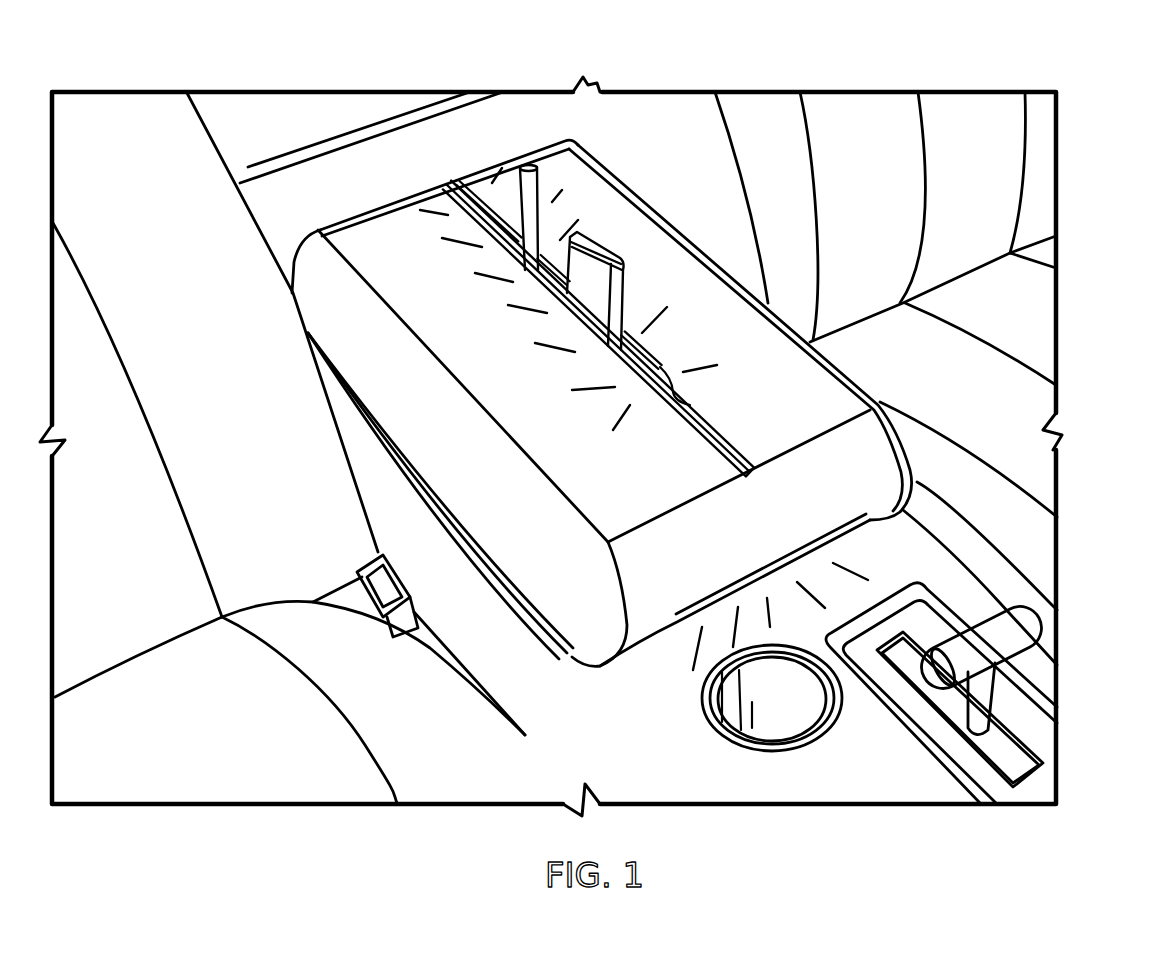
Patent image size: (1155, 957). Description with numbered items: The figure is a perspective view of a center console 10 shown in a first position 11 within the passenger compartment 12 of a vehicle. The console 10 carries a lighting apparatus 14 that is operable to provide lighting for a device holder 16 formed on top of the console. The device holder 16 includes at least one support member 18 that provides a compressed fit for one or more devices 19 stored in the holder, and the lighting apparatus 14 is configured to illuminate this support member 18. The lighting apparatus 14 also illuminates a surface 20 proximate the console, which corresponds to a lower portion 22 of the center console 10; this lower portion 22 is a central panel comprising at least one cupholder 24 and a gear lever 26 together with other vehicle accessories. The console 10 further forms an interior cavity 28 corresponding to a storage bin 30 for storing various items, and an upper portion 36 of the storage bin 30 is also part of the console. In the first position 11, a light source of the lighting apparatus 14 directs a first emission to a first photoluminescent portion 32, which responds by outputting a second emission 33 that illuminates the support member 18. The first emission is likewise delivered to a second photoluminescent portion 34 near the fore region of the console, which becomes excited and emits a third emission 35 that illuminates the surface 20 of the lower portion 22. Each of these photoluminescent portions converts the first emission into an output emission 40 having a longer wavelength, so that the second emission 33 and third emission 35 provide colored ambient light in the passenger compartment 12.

The center console 10 is at (740, 329).
The first position 11 is at (665, 204).
The passenger compartment 12 is at (973, 123).
The lighting apparatus 14 is at (437, 177).
The device holder 16 is at (483, 243).
The support member 18 is at (628, 329).
The devices 19 is at (540, 168).
The surface 20 is at (985, 660).
The lower portion 22 is at (898, 575).
The cupholder 24 is at (767, 733).
The gear lever 26 is at (987, 690).
The interior cavity 28 is at (569, 448).
The storage bin 30 is at (488, 509).
The first photoluminescent portion 32 is at (638, 378).
The second emission 33 is at (558, 358).
The second photoluminescent portion 34 is at (672, 631).
The third emission 35 is at (862, 572).
The upper portion 36 is at (372, 357).
The output emission 40 is at (722, 419).